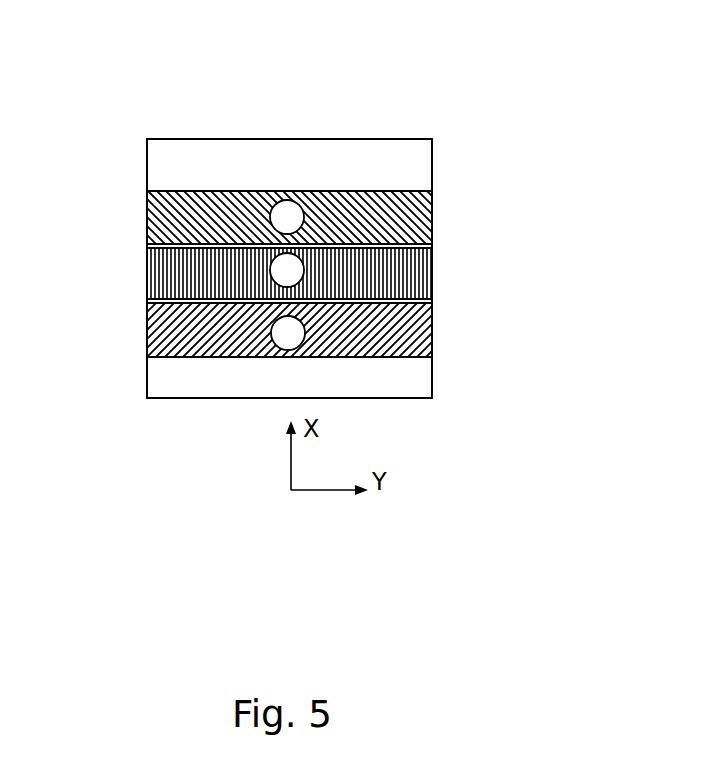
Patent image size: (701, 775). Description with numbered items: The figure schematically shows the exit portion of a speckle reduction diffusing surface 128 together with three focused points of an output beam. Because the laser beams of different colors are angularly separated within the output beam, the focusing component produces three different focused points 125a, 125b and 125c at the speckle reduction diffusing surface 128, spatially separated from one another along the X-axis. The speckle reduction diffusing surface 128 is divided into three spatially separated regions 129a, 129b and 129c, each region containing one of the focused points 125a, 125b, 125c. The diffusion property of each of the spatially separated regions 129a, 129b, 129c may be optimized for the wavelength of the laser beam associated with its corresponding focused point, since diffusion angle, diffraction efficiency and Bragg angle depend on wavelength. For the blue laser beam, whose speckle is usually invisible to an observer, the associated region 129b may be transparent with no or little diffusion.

The speckle reduction diffusing surface 128 is at (142, 108).
The focused point 125a is at (283, 212).
The focused point 125b is at (287, 270).
The focused point 125c is at (298, 327).
The spatially separated region 129a is at (433, 214).
The spatially separated region 129b is at (433, 276).
The spatially separated region 129c is at (433, 336).